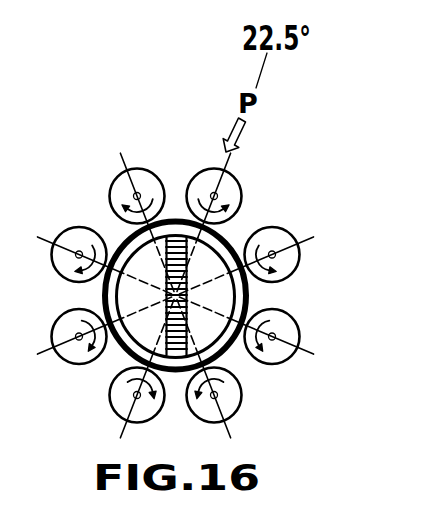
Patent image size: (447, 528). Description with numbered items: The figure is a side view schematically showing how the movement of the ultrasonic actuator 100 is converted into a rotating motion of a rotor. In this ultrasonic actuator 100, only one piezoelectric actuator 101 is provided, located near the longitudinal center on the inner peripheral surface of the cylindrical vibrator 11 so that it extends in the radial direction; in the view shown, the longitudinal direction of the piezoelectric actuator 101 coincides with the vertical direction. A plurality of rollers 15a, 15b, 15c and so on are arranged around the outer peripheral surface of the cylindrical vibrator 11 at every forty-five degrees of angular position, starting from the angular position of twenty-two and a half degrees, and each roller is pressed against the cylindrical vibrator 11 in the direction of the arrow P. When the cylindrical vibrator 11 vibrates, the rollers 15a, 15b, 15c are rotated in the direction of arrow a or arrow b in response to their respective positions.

The ultrasonic actuator 100 is at (110, 226).
The cylindrical vibrator 11 is at (182, 216).
The piezoelectric actuator 101 is at (240, 234).
The roller 15a is at (238, 180).
The roller 15b is at (296, 275).
The roller 15c is at (280, 365).